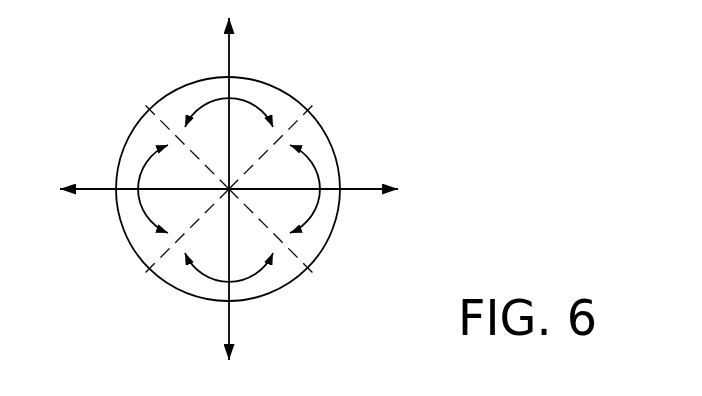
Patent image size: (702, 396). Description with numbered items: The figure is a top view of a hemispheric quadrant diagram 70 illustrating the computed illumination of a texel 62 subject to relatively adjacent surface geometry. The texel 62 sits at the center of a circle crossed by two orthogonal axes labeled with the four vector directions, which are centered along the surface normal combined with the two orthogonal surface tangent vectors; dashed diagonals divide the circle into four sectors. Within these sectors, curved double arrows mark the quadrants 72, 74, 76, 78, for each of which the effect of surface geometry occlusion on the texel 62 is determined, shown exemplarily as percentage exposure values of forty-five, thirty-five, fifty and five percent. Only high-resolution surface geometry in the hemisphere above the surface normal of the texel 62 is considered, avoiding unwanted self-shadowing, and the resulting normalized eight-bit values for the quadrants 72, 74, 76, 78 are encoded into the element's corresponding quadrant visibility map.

The load distribution diagram 70 is at (480, 89).
The texel 62 is at (325, 248).
The quadrant 72 is at (253, 104).
The quadrant 74 is at (316, 210).
The quadrant 76 is at (199, 270).
The quadrant 78 is at (145, 165).